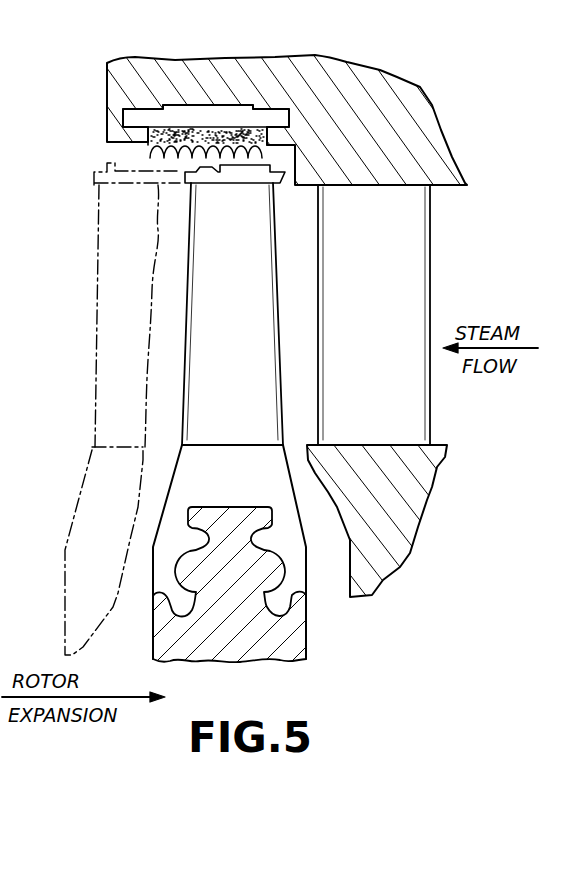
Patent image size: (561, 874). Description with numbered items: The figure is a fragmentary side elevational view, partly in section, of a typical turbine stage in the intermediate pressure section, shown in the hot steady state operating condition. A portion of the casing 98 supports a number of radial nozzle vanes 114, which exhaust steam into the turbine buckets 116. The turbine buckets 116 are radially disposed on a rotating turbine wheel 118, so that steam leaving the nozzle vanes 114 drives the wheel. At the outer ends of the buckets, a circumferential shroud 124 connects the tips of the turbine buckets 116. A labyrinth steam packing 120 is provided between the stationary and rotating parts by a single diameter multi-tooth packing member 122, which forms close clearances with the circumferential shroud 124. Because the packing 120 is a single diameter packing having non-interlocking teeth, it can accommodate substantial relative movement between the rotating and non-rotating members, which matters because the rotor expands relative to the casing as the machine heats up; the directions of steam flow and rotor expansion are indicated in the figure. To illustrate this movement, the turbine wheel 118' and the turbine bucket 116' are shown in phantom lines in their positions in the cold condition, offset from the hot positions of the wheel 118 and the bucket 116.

The casing 98 is at (388, 83).
The radial nozzle vanes 114 is at (407, 255).
The turbine buckets 116 is at (250, 314).
The rotating turbine wheel 118 is at (251, 557).
The labyrinth steam packing 120 is at (130, 156).
The single diameter multi-tooth packing member 122 is at (196, 120).
The circumferential shroud 124 is at (233, 176).
The turbine bucket in the cold condition 116' is at (108, 305).
The turbine wheel in the cold condition 118' is at (75, 551).